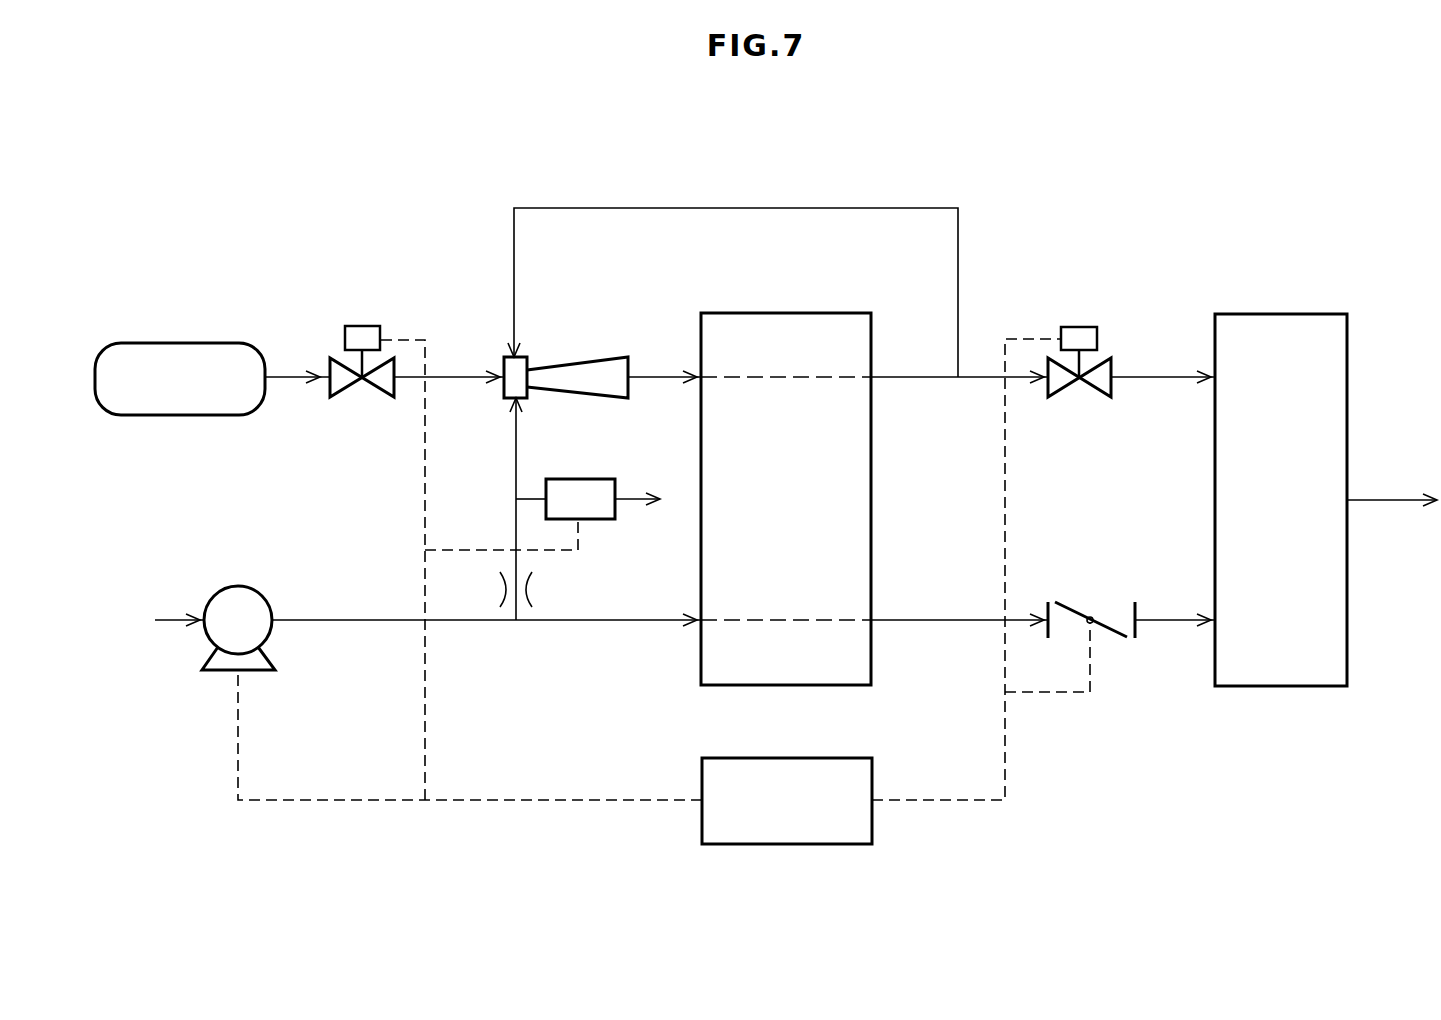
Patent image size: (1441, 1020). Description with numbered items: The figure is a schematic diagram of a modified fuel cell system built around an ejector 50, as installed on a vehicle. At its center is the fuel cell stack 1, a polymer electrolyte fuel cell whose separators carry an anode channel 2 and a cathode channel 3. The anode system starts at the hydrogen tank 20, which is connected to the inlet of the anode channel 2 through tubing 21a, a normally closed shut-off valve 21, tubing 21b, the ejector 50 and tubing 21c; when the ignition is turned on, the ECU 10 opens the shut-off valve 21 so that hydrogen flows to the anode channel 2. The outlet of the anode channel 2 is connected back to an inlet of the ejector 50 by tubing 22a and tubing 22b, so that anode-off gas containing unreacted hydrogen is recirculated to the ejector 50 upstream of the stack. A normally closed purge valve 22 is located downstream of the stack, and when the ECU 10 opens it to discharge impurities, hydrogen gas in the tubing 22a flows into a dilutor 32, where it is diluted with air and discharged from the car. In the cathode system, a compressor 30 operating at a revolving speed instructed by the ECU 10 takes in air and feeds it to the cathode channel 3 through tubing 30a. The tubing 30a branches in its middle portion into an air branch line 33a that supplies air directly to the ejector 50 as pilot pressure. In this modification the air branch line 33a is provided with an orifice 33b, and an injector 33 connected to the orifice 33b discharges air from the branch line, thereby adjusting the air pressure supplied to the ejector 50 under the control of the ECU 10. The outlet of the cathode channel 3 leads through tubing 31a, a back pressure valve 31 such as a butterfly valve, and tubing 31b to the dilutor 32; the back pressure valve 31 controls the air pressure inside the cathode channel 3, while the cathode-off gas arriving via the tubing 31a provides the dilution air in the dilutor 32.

The fuel cell stack 1 is at (784, 313).
The anode channel 2 is at (757, 380).
The cathode channel 3 is at (757, 619).
The ECU 10 is at (786, 844).
The hydrogen tank 20 is at (183, 343).
The shut-off valve 21 is at (361, 326).
The tubing 21a is at (292, 375).
The tubing 21b is at (459, 375).
The tubing 21c is at (655, 375).
The purge valve 22 is at (1079, 327).
The tubing 22a is at (907, 375).
The tubing 22b is at (739, 207).
The compressor 30 is at (239, 586).
The tubing 30a is at (329, 618).
The back pressure valve 31 is at (1068, 600).
The tubing 31a is at (917, 618).
The tubing 31b is at (1166, 618).
The dilutor 32 is at (1282, 314).
The injector 33 is at (582, 479).
The air branch line 33a is at (516, 525).
The orifice 33b is at (532, 587).
The ejector 50 is at (563, 348).